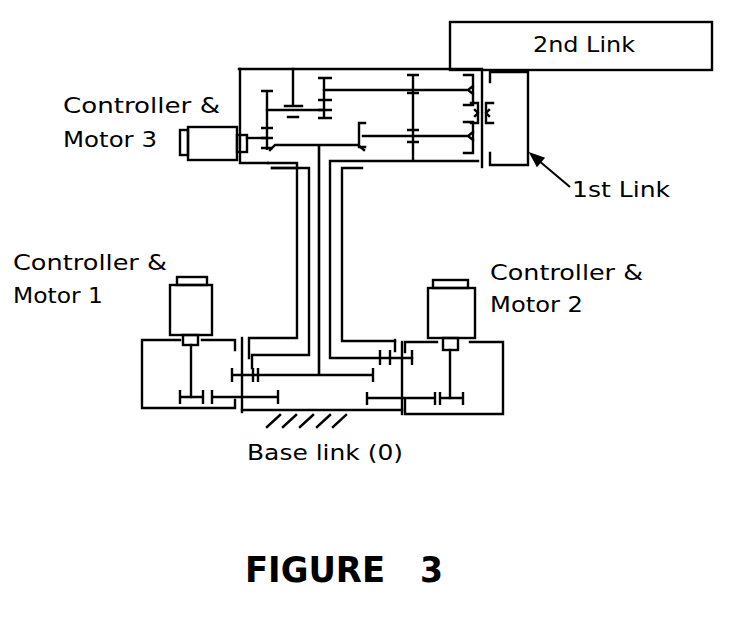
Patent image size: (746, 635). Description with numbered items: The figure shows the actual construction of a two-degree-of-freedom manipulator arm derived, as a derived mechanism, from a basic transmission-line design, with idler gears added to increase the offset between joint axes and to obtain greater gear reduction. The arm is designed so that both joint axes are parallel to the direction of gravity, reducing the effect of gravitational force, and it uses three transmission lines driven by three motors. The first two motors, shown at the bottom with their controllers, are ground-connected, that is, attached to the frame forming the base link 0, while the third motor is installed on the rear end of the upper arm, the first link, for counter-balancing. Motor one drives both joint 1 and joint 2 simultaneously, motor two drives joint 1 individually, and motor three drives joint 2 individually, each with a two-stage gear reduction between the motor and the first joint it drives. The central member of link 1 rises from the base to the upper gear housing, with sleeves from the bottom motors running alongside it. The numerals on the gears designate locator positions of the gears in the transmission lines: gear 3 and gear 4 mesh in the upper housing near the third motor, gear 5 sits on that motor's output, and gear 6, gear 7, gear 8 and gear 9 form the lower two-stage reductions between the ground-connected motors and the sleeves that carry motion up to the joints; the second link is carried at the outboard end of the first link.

The base link 0 is at (350, 255).
The joint 1 (first joint link) 1 is at (302, 264).
The gear at locator 2 (joint 2) 2 is at (397, 117).
The gear at locator 3 is at (339, 98).
The gear at locator 4 is at (260, 110).
The gear at locator 5 is at (262, 163).
The gear at locator 6 is at (401, 377).
The gear at locator 7 is at (457, 386).
The gear at locator 8 is at (244, 385).
The gear at locator 9 is at (184, 385).